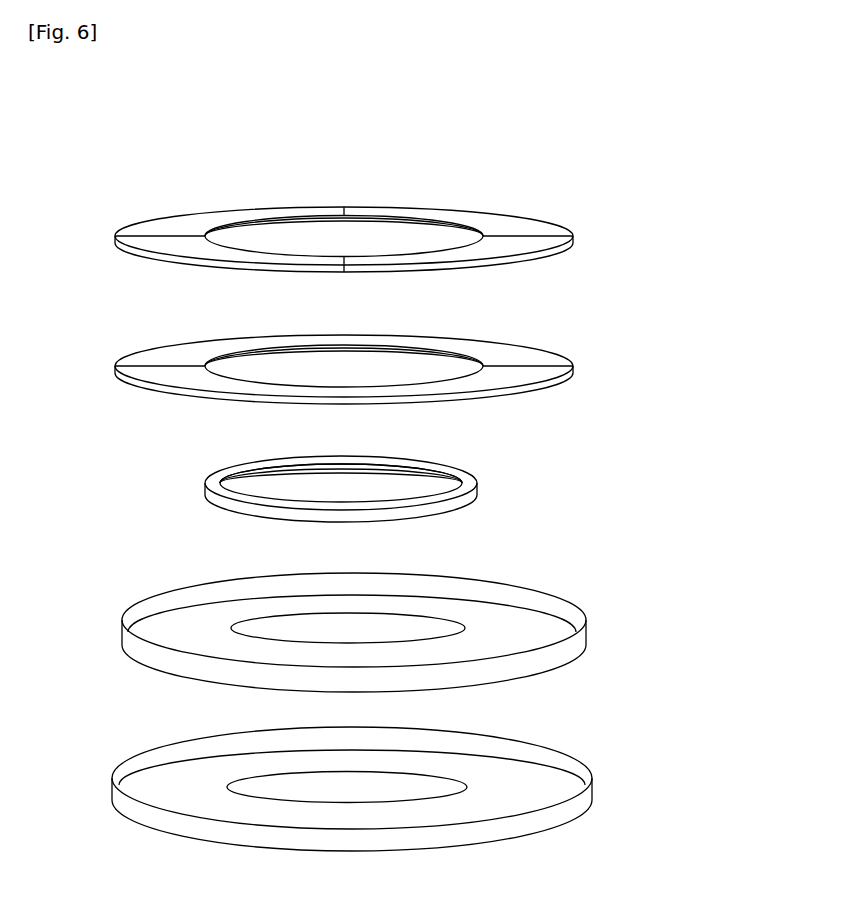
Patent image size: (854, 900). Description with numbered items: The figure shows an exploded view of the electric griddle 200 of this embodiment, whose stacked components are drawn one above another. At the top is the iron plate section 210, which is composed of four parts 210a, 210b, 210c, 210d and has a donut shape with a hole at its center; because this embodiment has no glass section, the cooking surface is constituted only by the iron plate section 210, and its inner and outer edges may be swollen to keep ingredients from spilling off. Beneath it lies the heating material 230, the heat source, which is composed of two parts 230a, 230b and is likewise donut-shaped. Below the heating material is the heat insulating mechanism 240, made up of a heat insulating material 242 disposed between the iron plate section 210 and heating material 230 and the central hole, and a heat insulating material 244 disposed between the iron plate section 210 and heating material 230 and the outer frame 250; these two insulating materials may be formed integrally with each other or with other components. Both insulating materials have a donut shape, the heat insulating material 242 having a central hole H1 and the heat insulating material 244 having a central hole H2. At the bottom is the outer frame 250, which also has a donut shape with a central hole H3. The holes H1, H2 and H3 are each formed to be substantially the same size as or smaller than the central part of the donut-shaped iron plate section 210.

The electric griddle 200 is at (365, 83).
The iron plate section 210 is at (418, 240).
The part of iron plate section 210a is at (217, 214).
The part of iron plate section 210b is at (517, 216).
The part of iron plate section 210c is at (519, 246).
The part of iron plate section 210d is at (190, 252).
The heating material 230 is at (427, 371).
The part of heating material 230a is at (522, 358).
The part of heating material 230b is at (520, 379).
The heat insulating mechanism 240 is at (405, 561).
The heat insulating material 242 is at (411, 489).
The heat insulating material 244 is at (370, 620).
The outer frame 250 is at (371, 779).
The hole H1 is at (412, 482).
The hole H2 is at (393, 621).
The hole H3 is at (410, 782).